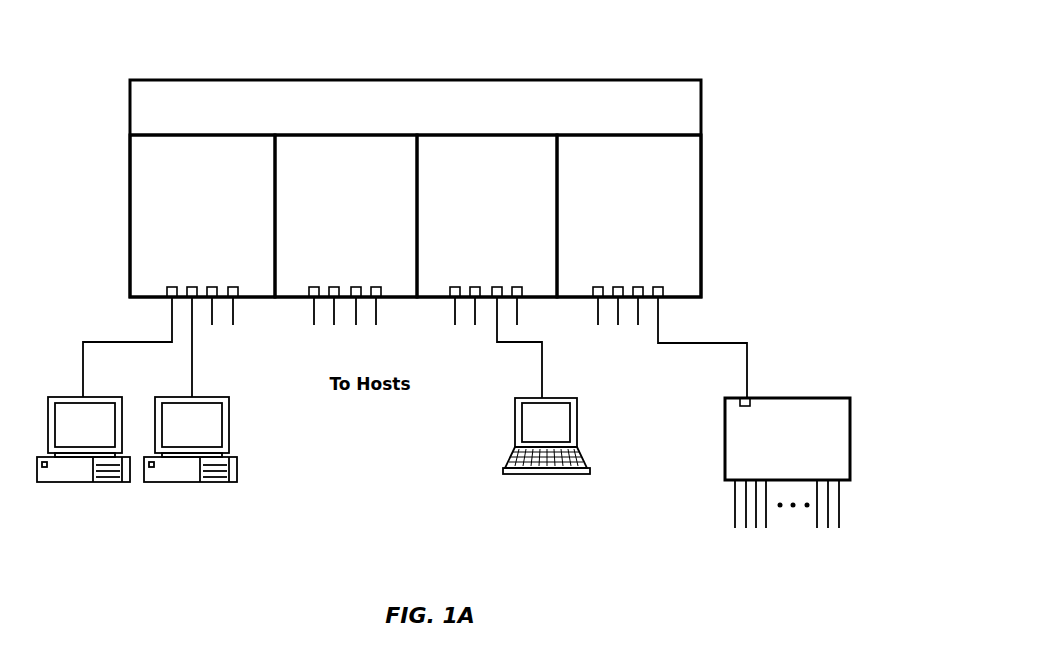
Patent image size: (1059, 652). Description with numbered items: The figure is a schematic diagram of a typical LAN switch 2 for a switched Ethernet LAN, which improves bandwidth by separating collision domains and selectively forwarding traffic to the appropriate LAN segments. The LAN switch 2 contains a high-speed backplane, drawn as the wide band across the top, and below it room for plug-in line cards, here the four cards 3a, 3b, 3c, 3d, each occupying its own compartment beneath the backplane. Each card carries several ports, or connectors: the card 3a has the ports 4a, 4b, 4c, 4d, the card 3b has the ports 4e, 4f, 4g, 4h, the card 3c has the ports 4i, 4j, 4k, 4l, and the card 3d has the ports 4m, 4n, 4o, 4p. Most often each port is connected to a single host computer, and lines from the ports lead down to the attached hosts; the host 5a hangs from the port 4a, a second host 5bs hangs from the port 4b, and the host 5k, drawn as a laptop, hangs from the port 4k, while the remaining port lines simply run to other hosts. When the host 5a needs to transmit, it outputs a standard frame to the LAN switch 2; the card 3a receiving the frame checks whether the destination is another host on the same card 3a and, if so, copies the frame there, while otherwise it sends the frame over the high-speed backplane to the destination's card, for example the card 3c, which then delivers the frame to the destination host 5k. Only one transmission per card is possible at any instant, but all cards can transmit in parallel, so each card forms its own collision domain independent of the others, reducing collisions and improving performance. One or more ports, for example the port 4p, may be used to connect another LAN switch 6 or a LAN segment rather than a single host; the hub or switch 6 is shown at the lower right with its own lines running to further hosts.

The LAN switch 2 is at (667, 60).
The plug-in line card 3a is at (190, 193).
The plug-in line card 3b is at (334, 193).
The plug-in line card 3c is at (476, 193).
The plug-in line card 3d is at (618, 193).
The port 4a is at (172, 287).
The port 4b is at (190, 287).
The port 4c is at (212, 287).
The port 4d is at (233, 287).
The port 4e is at (314, 287).
The port 4f is at (334, 287).
The port 4g is at (356, 287).
The port 4h is at (376, 287).
The port 4i is at (455, 287).
The port 4j is at (475, 287).
The port 4k is at (497, 287).
The port 4l is at (517, 287).
The port 4m is at (598, 287).
The port 4n is at (618, 287).
The port 4o is at (638, 287).
The port 4p is at (658, 287).
The host 5a is at (83, 482).
The host computer 5bs is at (190, 482).
The host 5k is at (547, 474).
The LAN switch 6 is at (850, 437).